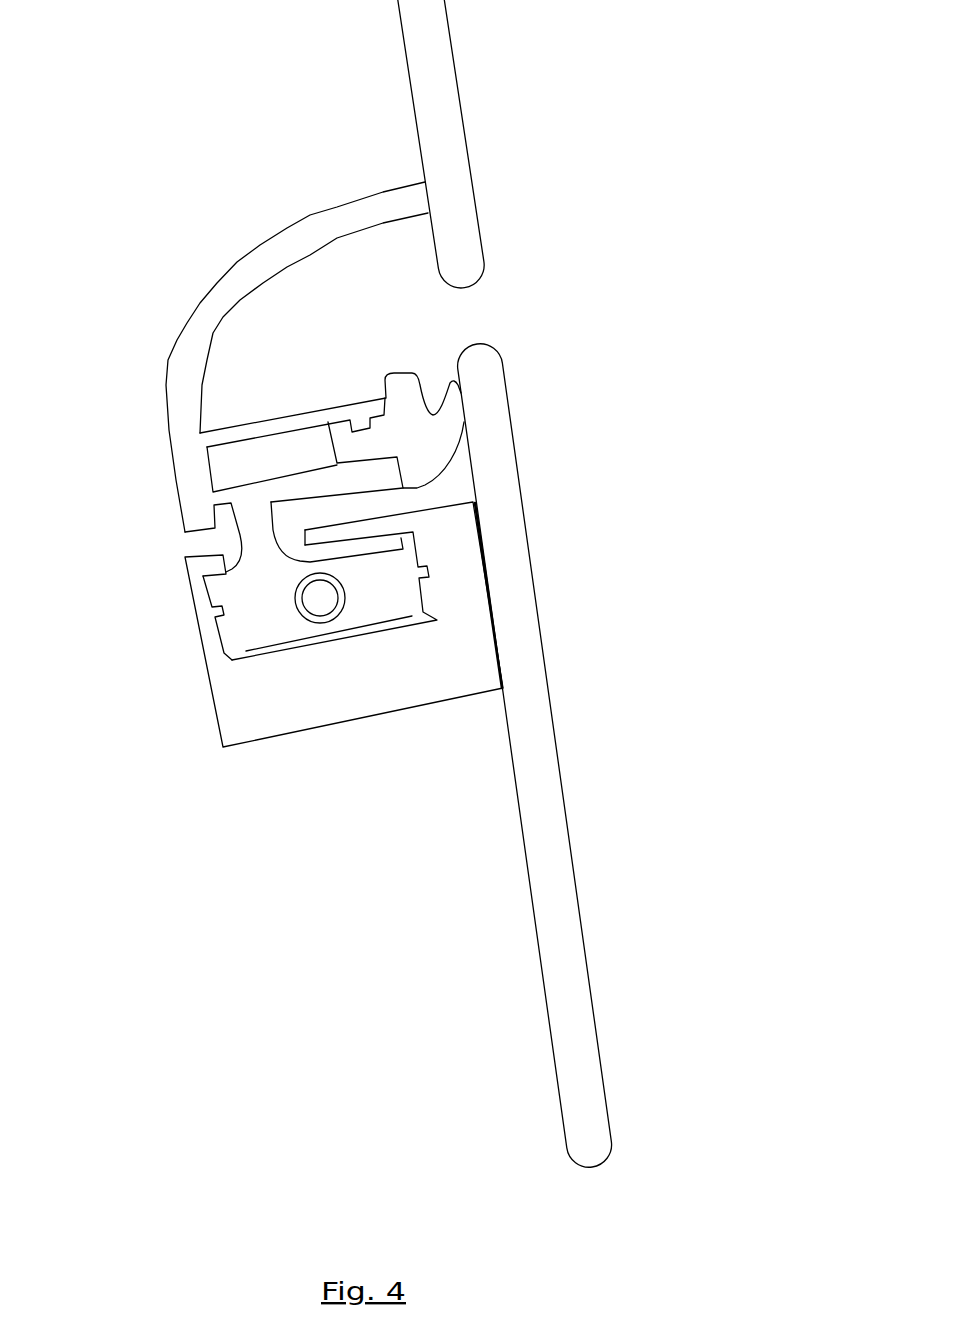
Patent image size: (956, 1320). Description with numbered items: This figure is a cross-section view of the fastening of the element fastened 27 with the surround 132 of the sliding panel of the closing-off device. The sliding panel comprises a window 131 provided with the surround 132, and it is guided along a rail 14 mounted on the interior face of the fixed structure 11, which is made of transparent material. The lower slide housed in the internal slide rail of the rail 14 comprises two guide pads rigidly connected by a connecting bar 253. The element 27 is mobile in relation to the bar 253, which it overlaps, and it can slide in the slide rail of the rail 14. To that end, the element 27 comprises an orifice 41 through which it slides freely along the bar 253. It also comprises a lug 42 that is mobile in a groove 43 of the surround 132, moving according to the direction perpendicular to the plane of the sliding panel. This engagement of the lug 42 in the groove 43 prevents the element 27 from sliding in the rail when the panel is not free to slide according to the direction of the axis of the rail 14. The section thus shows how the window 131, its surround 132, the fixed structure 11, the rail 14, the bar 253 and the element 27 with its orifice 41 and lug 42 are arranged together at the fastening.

The fixed structure 11 is at (538, 797).
The window 131 is at (441, 67).
The surround 132 is at (217, 298).
The groove 43 is at (311, 491).
The lug 42 is at (250, 540).
The rail 14 is at (263, 725).
The element fastened 27 is at (246, 630).
The orifice 41 is at (337, 602).
The connecting bar 253 is at (323, 600).